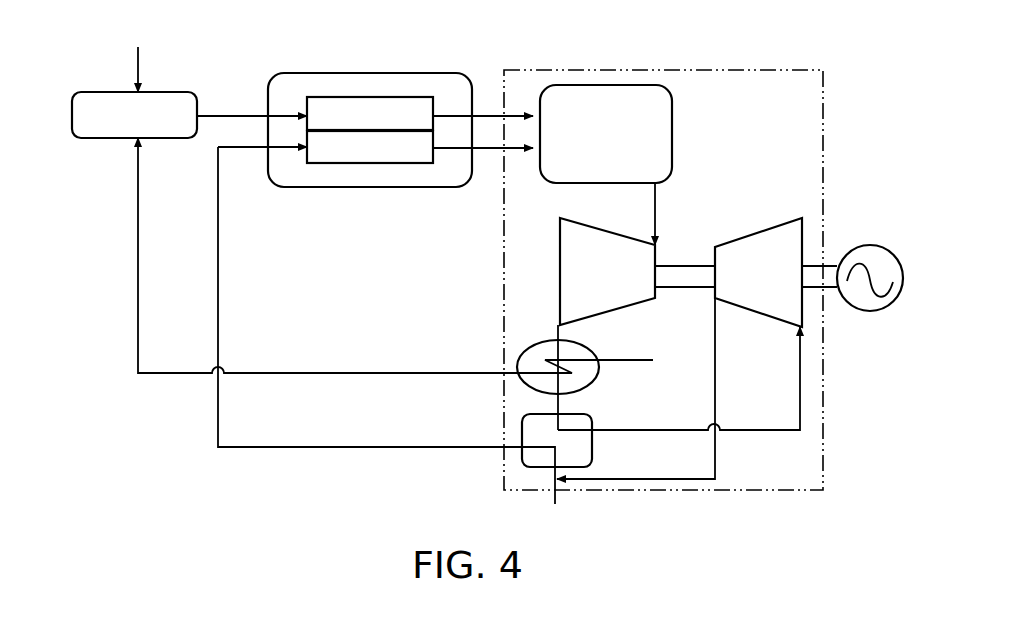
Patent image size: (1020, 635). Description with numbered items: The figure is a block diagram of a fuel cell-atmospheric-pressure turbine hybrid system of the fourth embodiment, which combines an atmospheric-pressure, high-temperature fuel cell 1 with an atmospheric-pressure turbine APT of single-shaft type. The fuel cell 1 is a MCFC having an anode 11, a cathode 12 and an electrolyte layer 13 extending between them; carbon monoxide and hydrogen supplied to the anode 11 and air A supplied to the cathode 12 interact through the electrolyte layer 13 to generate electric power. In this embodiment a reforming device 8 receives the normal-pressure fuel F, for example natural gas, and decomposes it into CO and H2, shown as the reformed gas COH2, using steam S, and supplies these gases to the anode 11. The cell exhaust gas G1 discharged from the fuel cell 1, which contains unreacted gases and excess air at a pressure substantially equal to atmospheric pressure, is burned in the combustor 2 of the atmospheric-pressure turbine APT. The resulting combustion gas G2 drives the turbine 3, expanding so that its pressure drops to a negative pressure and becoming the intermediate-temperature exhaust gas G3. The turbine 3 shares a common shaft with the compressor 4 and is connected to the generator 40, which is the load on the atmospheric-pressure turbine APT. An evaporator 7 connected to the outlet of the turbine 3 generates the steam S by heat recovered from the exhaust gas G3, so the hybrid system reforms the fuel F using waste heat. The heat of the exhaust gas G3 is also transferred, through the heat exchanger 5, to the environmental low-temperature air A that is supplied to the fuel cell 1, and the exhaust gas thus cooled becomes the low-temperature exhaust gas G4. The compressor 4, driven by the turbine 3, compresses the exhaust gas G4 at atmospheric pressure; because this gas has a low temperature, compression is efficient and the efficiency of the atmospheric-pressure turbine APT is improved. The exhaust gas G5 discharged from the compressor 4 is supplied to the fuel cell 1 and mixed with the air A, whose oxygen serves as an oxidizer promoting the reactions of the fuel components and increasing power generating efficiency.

The fuel cell 1 is at (383, 140).
The combustor 2 is at (672, 123).
The turbine 3 is at (560, 252).
The compressor 4 is at (763, 226).
The heat exchanger 5 is at (593, 446).
The evaporator 7 is at (537, 340).
The reforming device 8 is at (170, 92).
The anode 11 is at (413, 97).
The cathode 12 is at (407, 163).
The electrolyte layer 13 is at (423, 128).
The generator 40 is at (868, 245).
The atmospheric-pressure turbine APT is at (730, 70).
The fuel F is at (138, 58).
The steam S is at (380, 373).
The air A is at (553, 518).
The cell exhaust gas G1 is at (493, 118).
The combustion gas G2 is at (657, 202).
The exhaust gas G3 is at (560, 327).
The exhaust gas G4 is at (800, 365).
The exhaust gas G5 is at (717, 455).
The carbon monoxide and hydrogen gas COH2 is at (252, 103).